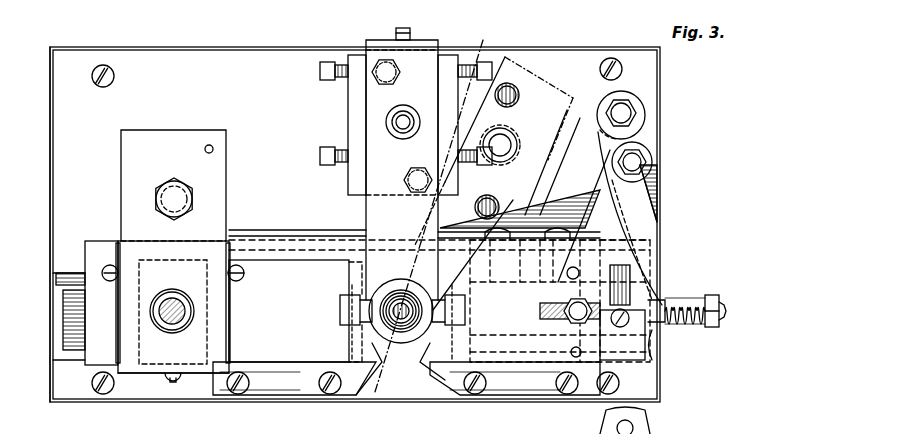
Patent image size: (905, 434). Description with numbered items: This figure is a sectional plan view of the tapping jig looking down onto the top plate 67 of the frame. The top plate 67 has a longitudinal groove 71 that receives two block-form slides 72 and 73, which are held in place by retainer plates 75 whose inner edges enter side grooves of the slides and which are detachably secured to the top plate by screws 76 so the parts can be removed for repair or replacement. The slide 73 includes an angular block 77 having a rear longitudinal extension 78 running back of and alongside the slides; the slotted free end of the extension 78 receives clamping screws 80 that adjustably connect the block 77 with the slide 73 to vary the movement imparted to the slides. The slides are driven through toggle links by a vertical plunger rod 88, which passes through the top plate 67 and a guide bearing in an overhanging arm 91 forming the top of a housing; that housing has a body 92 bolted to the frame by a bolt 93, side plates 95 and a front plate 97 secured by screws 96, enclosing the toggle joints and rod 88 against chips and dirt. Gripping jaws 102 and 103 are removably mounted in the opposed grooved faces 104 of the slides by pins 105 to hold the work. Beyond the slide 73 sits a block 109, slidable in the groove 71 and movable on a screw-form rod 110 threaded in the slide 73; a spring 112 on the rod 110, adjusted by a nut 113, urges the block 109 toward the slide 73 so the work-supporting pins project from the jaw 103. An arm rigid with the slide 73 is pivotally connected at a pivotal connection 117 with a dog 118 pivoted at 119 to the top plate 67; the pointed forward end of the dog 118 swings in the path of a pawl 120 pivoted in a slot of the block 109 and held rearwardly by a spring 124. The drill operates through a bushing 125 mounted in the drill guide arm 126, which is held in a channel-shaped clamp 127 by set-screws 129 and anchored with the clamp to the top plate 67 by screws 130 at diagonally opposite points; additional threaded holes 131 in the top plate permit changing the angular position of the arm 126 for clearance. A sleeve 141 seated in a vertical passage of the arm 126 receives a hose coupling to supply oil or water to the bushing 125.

The top plate 67 is at (355, 224).
The longitudinal groove 71 is at (53, 355).
The slide 72 is at (295, 311).
The slide 73 is at (560, 301).
The retainer plates 75 is at (508, 386).
The screws 76 is at (292, 385).
The slide or block 77 is at (85, 303).
The longitudinal extension 78 is at (290, 238).
The clamping screws 80 is at (535, 225).
The vertical rod 88 is at (172, 298).
The overhanging arm 91 is at (173, 307).
The cover body 92 is at (173, 185).
The bolt 93 is at (176, 199).
The side plates 95 is at (118, 250).
The screws 96 is at (108, 270).
The front plate 97 is at (150, 373).
The gripping jaw 102 is at (366, 334).
The gripping jaw 103 is at (450, 330).
The grooved faces 104 is at (342, 305).
The pins 105 is at (372, 380).
The block 109 is at (632, 352).
The pin or rod 110 is at (726, 308).
The spring 112 is at (688, 305).
The nut 113 is at (719, 324).
The pivotal connection 117 is at (634, 162).
The dog 118 is at (652, 236).
The pivot 119 is at (622, 113).
The pawl 120 is at (660, 330).
The spring 124 is at (660, 350).
The bushing 125 is at (398, 335).
The drill guide or arm 126 is at (358, 62).
The clamp 127 is at (350, 120).
The set-screws 129 is at (470, 70).
The screws 130 is at (392, 68).
The additional sockets or holes 131 is at (512, 140).
The sleeve 141 is at (406, 115).